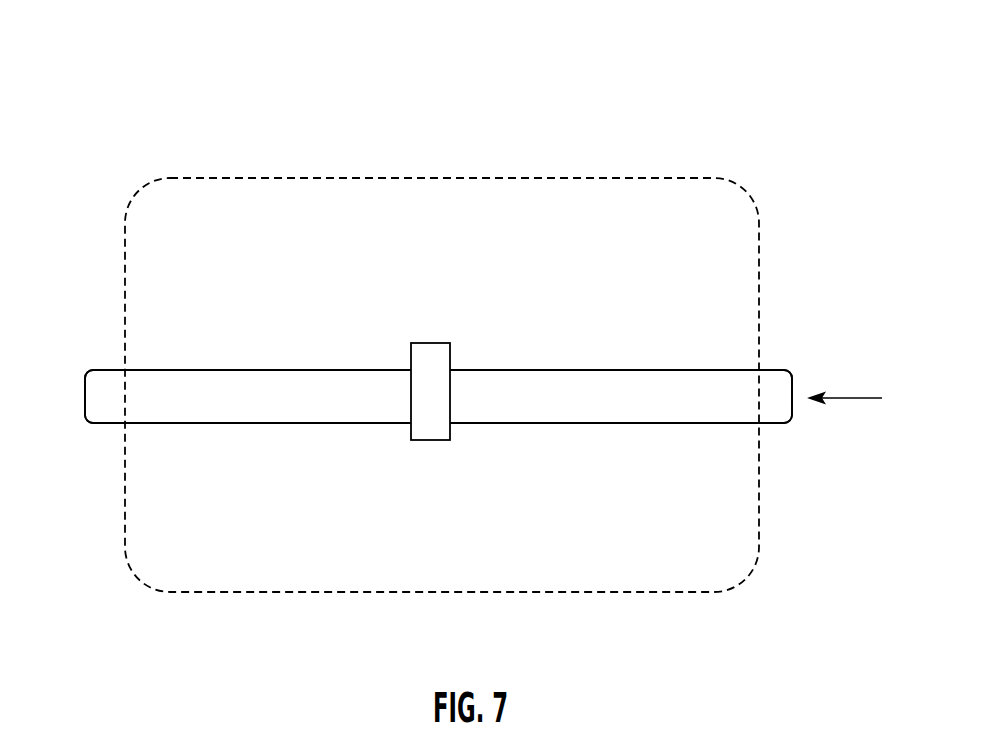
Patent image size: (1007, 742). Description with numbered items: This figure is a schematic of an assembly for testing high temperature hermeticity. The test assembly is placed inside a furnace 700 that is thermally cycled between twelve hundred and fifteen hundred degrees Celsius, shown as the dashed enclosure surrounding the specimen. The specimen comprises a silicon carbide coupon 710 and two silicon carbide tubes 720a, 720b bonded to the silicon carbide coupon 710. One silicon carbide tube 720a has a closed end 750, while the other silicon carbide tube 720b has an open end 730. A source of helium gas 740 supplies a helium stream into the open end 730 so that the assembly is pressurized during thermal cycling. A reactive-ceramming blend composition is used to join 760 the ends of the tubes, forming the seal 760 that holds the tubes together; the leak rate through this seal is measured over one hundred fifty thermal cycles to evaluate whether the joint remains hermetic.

The furnace 700 is at (170, 75).
The silicon carbide coupon 710 is at (620, 179).
The silicon carbide tube 720a is at (258, 424).
The silicon carbide tube 720b is at (626, 424).
The open end 730 is at (793, 411).
The source of helium gas 740 is at (848, 398).
The closed end 750 is at (85, 393).
The joint 760 is at (431, 343).